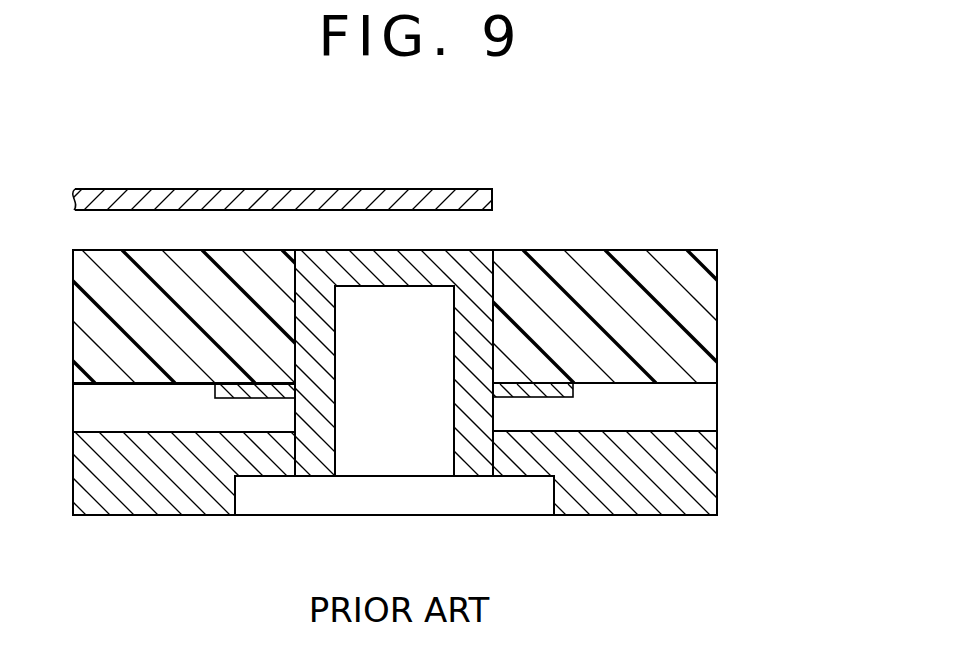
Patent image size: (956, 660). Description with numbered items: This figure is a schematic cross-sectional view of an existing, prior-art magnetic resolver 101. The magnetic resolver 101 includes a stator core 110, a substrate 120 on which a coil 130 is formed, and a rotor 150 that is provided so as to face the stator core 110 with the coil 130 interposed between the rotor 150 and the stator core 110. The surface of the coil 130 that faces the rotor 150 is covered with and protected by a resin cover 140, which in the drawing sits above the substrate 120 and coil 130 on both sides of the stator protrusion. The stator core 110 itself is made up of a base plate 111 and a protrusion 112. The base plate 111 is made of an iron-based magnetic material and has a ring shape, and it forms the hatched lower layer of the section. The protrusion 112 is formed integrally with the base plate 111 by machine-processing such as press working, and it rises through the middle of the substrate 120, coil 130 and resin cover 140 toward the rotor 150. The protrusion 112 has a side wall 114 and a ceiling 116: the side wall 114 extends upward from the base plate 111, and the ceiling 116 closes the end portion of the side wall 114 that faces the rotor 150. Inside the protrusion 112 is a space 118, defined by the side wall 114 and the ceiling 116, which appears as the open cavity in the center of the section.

The magnetic resolver 101 is at (697, 192).
The stator core 110 is at (675, 453).
The base plate 111 is at (170, 480).
The protrusion 112 is at (377, 138).
The side wall 114 is at (468, 337).
The ceiling 116 is at (412, 258).
The space 118 is at (392, 445).
The substrate 120 is at (672, 412).
The coil 130 is at (607, 393).
The resin cover 140 is at (692, 320).
The rotor 150 is at (258, 200).